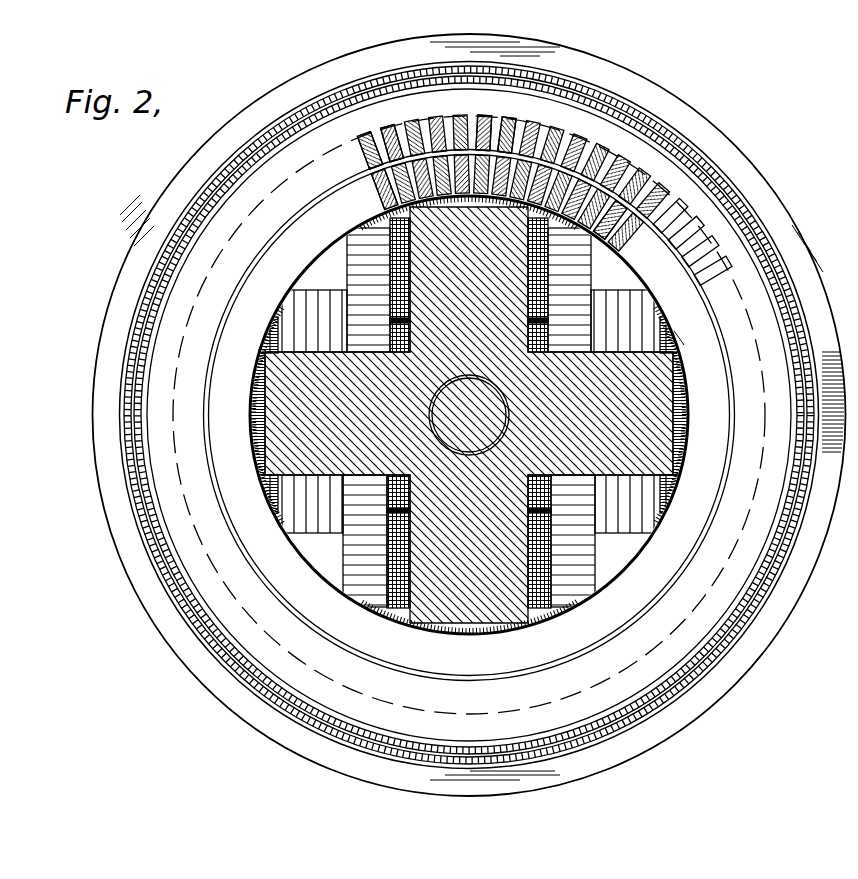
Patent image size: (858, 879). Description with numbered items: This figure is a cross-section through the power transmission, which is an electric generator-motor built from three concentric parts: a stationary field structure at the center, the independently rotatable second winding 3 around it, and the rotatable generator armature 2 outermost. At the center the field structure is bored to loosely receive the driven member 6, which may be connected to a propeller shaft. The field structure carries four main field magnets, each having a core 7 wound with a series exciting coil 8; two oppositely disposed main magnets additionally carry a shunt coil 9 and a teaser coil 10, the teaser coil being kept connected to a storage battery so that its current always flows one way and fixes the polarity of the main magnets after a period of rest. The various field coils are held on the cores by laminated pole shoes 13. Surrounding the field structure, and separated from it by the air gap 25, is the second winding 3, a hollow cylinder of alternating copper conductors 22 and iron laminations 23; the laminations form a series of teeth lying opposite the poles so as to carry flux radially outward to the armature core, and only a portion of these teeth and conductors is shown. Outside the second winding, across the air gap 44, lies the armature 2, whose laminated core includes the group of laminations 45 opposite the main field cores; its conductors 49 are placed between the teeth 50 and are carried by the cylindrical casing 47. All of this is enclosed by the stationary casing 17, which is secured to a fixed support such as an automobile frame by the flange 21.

The generator armature 2 is at (513, 168).
The second winding 3 is at (469, 415).
The driven member 6 is at (469, 415).
The core 7 is at (469, 415).
The series exciting coil 8 is at (358, 270).
The shunt coil 9 is at (390, 250).
The teaser coil 10 is at (397, 326).
The pole shoes 13 is at (370, 211).
The casing 17 is at (275, 131).
The flange 21 is at (758, 181).
The copper conductors 22 is at (379, 196).
The iron laminations 23 is at (605, 238).
The air gap 25 is at (674, 331).
The air gap 44 is at (717, 498).
The group of laminations 45 is at (692, 227).
The cylindrical casing 47 is at (290, 140).
The conductors 49 is at (392, 132).
The teeth 50 is at (378, 134).